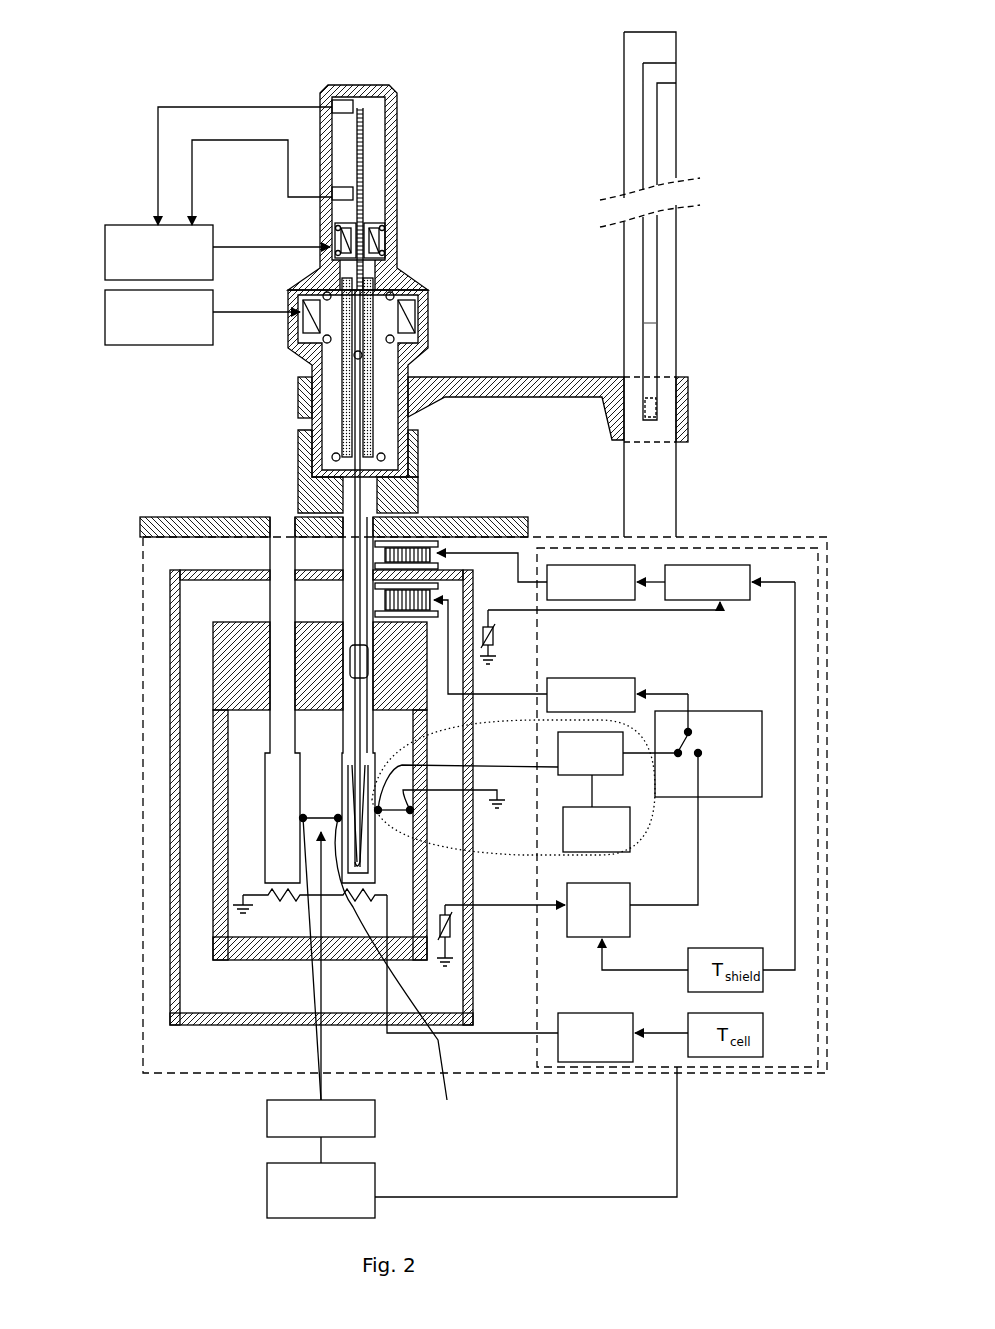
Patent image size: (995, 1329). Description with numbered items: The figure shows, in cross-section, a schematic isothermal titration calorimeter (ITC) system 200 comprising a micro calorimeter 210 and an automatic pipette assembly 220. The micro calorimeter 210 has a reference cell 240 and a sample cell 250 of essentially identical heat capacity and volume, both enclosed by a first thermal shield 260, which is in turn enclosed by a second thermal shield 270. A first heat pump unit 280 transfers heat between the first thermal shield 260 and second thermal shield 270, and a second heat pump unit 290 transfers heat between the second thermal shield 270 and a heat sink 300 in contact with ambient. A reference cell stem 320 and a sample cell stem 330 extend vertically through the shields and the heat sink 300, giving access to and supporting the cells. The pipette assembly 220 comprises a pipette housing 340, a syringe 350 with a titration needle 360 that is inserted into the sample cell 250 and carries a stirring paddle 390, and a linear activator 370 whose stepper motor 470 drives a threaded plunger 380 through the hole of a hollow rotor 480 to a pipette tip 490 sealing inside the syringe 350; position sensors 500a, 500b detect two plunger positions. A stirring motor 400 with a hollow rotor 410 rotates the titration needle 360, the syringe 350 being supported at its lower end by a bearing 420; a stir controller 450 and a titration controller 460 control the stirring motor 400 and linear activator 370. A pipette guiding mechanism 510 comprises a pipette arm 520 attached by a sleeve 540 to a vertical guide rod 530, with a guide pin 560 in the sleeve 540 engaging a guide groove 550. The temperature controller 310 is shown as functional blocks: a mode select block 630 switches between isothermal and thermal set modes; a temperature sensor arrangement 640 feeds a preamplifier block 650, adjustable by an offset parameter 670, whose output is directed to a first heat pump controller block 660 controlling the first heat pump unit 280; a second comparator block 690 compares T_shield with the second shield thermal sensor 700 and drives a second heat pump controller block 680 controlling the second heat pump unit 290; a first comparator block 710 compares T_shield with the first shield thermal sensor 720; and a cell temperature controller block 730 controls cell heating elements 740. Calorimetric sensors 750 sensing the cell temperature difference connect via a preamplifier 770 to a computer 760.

The ITC system 200 is at (90, 66).
The micro calorimeter 210 is at (103, 480).
The automatic pipette assembly 220 is at (448, 72).
The reference cell 240 is at (264, 813).
The sample cell 250 is at (340, 803).
The first thermal shield 260 is at (213, 841).
The second thermal shield 270 is at (170, 897).
The first heat pump unit 280 is at (385, 600).
The second heat pump unit 290 is at (385, 557).
The heat sink 300 is at (140, 525).
The temperature controller 310 is at (780, 547).
The reference cell stem 320 is at (213, 690).
The sample cell stem 330 is at (270, 695).
The pipette housing 340 is at (398, 124).
The syringe 350 is at (374, 362).
The titration needle 360 is at (352, 752).
The linear activator 370 is at (382, 203).
The plunger 380 is at (363, 280).
The stirring paddle 390 is at (352, 777).
The stirring motor 400 is at (427, 297).
The hollow rotor 410 is at (318, 340).
The bearing 420 is at (298, 458).
The stir controller 450 is at (202, 317).
The titration controller 460 is at (217, 252).
The stepper motor 470 is at (400, 223).
The hollow rotor 480 is at (364, 223).
The pipette tip 490 is at (355, 360).
The position sensor 500a is at (343, 100).
The position sensor 500b is at (336, 187).
The pipette guiding mechanism 510 is at (562, 74).
The pipette arm 520 is at (480, 400).
The guide rod 530 is at (676, 277).
The sleeve 540 is at (688, 408).
The guide groove 550 is at (650, 323).
The guide pin 560 is at (650, 420).
The mode select block 630 is at (696, 799).
The temperature sensor arrangement 640 is at (513, 787).
The preamplifier block 650 is at (618, 753).
The first heat pump controller block 660 is at (561, 656).
The offset parameter 670 is at (596, 813).
The second heat pump controller block 680 is at (536, 576).
The second comparator block 690 is at (641, 767).
The second shield thermal sensor 700 is at (507, 637).
The first comparator block 710 is at (566, 926).
The first shield thermal sensor 720 is at (450, 932).
The cell temperature controller block 730 is at (537, 978).
The cell heating elements 740 is at (290, 913).
The calorimetric sensors 750 is at (400, 973).
The computer 760 is at (472, 1142).
The preamplifier 770 is at (321, 984).